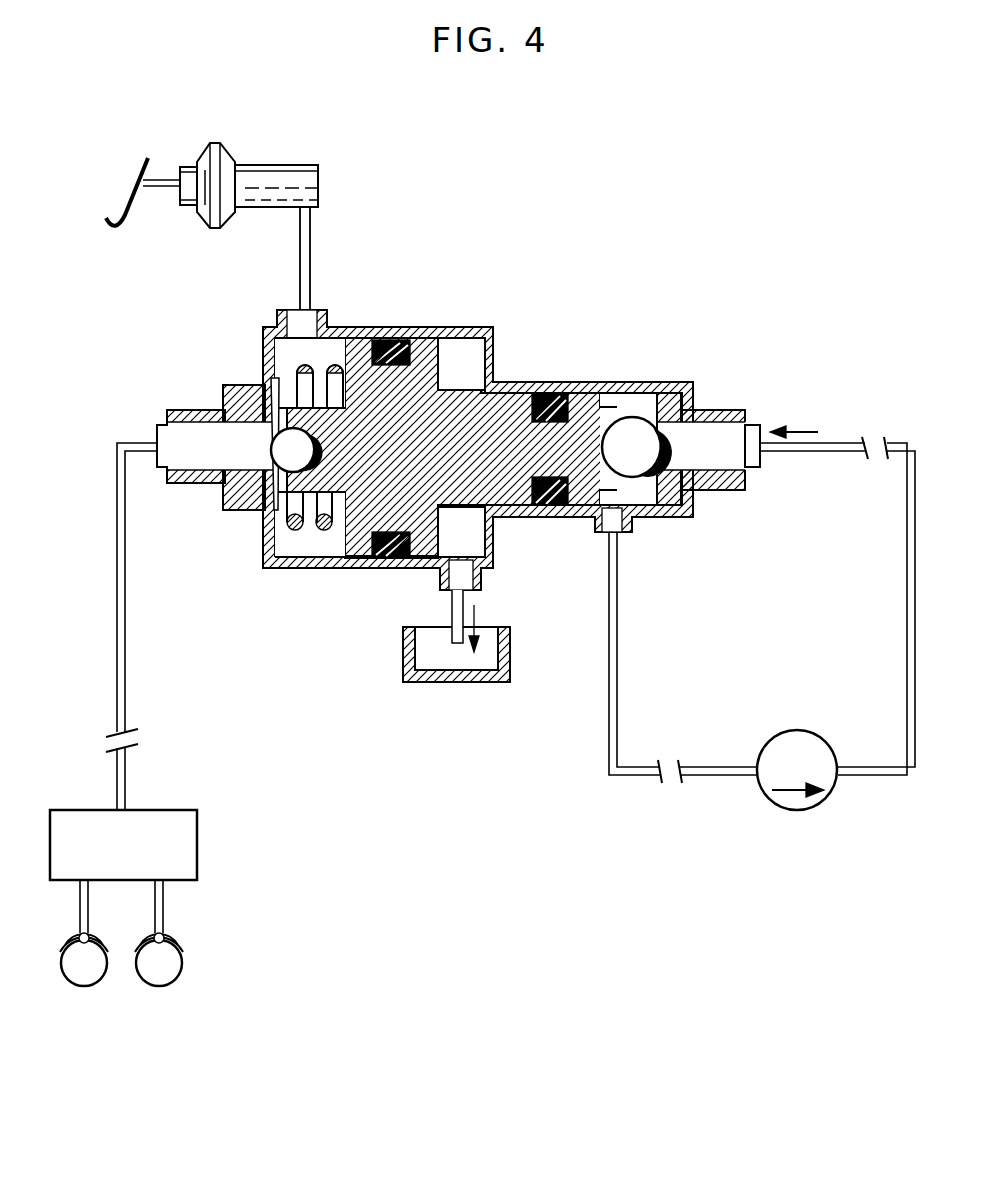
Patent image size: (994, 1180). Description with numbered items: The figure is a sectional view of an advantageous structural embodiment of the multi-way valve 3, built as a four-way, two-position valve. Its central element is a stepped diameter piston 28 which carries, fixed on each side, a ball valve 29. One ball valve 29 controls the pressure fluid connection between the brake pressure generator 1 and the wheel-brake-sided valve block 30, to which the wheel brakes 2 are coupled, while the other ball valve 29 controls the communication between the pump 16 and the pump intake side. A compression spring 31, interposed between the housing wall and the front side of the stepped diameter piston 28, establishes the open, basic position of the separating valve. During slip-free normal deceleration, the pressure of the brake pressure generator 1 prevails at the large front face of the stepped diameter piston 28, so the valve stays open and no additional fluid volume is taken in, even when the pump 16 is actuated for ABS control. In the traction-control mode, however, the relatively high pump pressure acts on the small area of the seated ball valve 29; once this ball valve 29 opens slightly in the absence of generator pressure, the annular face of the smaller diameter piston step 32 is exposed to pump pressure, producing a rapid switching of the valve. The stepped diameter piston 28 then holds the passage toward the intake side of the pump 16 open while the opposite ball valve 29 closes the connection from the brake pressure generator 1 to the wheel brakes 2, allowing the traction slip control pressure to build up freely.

The brake pressure generator 1 is at (277, 173).
The wheel brake 2 is at (83, 973).
The multi-way valve 3 is at (519, 342).
The pump 16 is at (797, 812).
The stepped diameter piston 28 is at (367, 503).
The ball valve 29 is at (256, 518).
The valve block 30 is at (178, 848).
The compression spring 31 is at (318, 528).
The smaller diameter piston step 32 is at (604, 392).